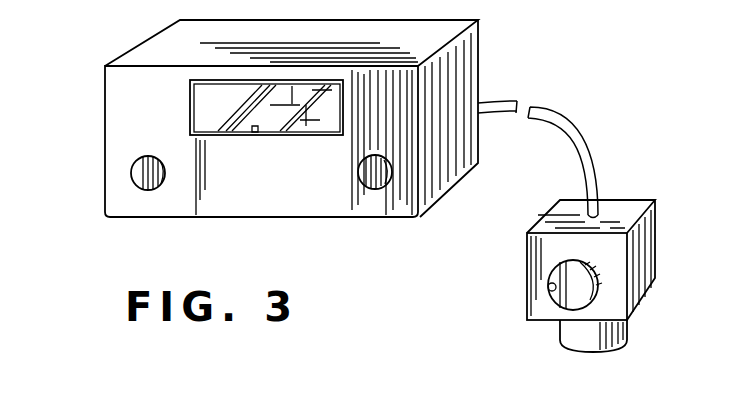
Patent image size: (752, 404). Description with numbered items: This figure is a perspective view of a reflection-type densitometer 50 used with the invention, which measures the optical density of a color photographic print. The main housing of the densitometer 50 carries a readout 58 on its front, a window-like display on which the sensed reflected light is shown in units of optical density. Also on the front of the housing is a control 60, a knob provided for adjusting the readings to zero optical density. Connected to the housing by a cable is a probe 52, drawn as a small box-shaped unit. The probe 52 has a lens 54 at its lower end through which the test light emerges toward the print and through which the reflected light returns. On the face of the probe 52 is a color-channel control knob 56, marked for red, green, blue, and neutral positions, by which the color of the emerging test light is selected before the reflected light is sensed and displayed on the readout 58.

The reflection-type densitometer 50 is at (50, 117).
The probe 52 is at (658, 233).
The lens 54 is at (622, 342).
The color-channel control knob 56 is at (548, 297).
The readout 58 is at (235, 135).
The control 60 is at (133, 176).